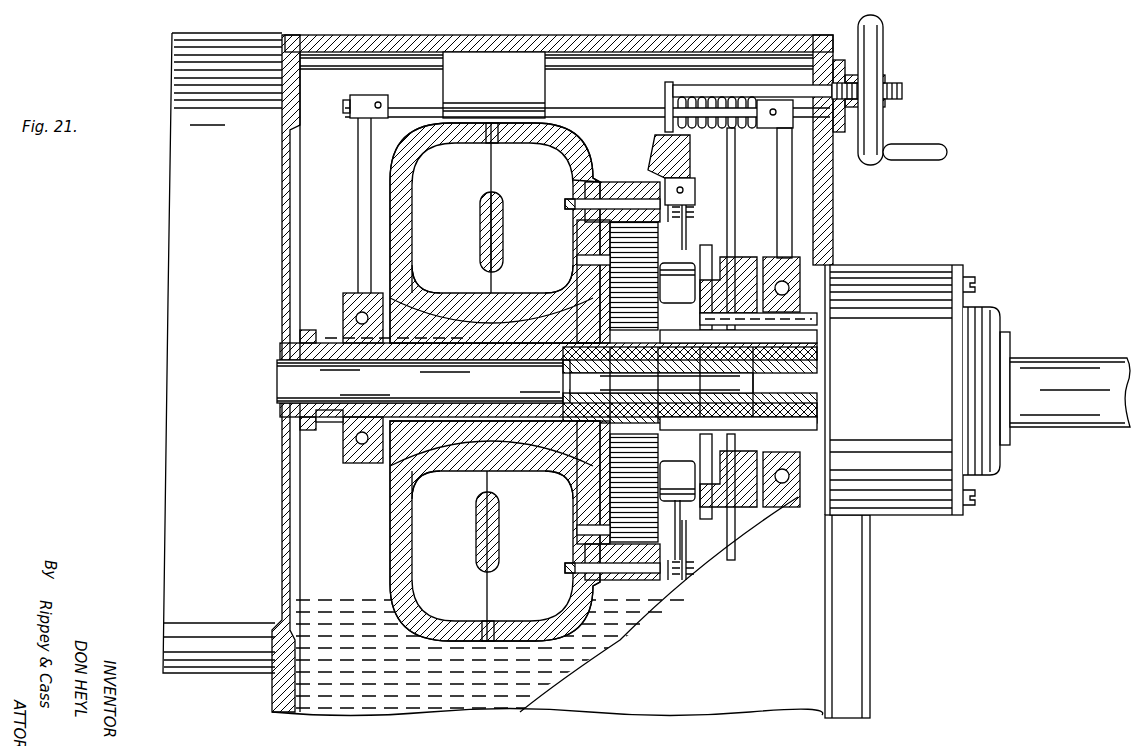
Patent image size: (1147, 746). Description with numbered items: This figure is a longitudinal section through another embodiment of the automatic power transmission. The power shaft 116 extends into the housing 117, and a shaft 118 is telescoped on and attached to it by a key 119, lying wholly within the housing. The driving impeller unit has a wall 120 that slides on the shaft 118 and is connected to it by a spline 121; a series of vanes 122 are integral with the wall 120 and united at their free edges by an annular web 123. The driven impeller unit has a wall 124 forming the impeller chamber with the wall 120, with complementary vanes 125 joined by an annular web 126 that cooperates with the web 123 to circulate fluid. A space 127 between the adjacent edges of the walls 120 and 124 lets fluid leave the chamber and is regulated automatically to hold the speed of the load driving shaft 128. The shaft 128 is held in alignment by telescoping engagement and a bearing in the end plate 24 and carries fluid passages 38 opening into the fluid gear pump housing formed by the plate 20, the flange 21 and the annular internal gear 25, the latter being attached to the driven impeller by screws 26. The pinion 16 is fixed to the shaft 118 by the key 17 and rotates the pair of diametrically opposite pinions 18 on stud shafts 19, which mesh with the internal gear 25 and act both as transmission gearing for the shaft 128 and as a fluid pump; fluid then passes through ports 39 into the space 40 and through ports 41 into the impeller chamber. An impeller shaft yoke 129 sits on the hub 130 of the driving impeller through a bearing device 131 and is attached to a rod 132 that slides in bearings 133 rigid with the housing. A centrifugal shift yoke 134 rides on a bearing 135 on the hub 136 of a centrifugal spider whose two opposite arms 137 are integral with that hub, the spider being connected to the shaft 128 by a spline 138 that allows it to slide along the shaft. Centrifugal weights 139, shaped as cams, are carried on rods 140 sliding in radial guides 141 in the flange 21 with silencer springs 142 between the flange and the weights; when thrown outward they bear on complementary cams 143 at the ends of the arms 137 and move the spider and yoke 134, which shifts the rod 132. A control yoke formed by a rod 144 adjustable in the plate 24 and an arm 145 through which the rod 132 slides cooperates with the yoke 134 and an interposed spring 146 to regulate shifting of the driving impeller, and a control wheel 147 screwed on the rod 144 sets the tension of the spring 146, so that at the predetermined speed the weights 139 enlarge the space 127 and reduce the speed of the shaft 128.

The pinion 16 is at (553, 401).
The key 17 is at (638, 370).
The pinions 18 is at (580, 268).
The stud shafts 19 is at (702, 290).
The cover plate 20 is at (600, 277).
The flange 21 is at (690, 527).
The end plate 24 is at (836, 208).
The internal gear 25 is at (620, 184).
The screws 26 is at (565, 204).
The fluid passages 38 is at (815, 338).
The ports 39 is at (580, 258).
The space 40 is at (580, 461).
The ports 41 is at (585, 236).
The power shaft 116 is at (277, 385).
The housing 117 is at (370, 36).
The shaft 118 is at (512, 444).
The key 119 is at (440, 444).
The wall of driving impeller unit 120 is at (405, 238).
The spline 121 is at (418, 340).
The vanes 122 is at (455, 294).
The annular web 123 is at (480, 245).
The wall of driven impeller unit 124 is at (576, 172).
The vanes 125 is at (513, 294).
The annular web 126 is at (504, 238).
The space 127 is at (494, 155).
The load driving shaft 128 is at (1112, 432).
The impeller shaft yoke 129 is at (358, 258).
The hub 130 is at (332, 425).
The bearing device 131 is at (362, 463).
The rod 132 is at (583, 108).
The bearings 133 is at (468, 97).
The centrifugal shift yoke 134 is at (777, 238).
The bearing 135 is at (797, 294).
The hub 136 is at (815, 318).
The arms 137 is at (735, 205).
The spline 138 is at (745, 296).
The centrifugal weights 139 is at (688, 178).
The rods 140 is at (690, 226).
The radial guides 141 is at (688, 263).
The silencer springs 142 is at (693, 195).
The cams 143 is at (680, 152).
The rod 144 is at (746, 85).
The arm 145 is at (664, 121).
The spring 146 is at (742, 128).
The control wheel 147 is at (883, 78).